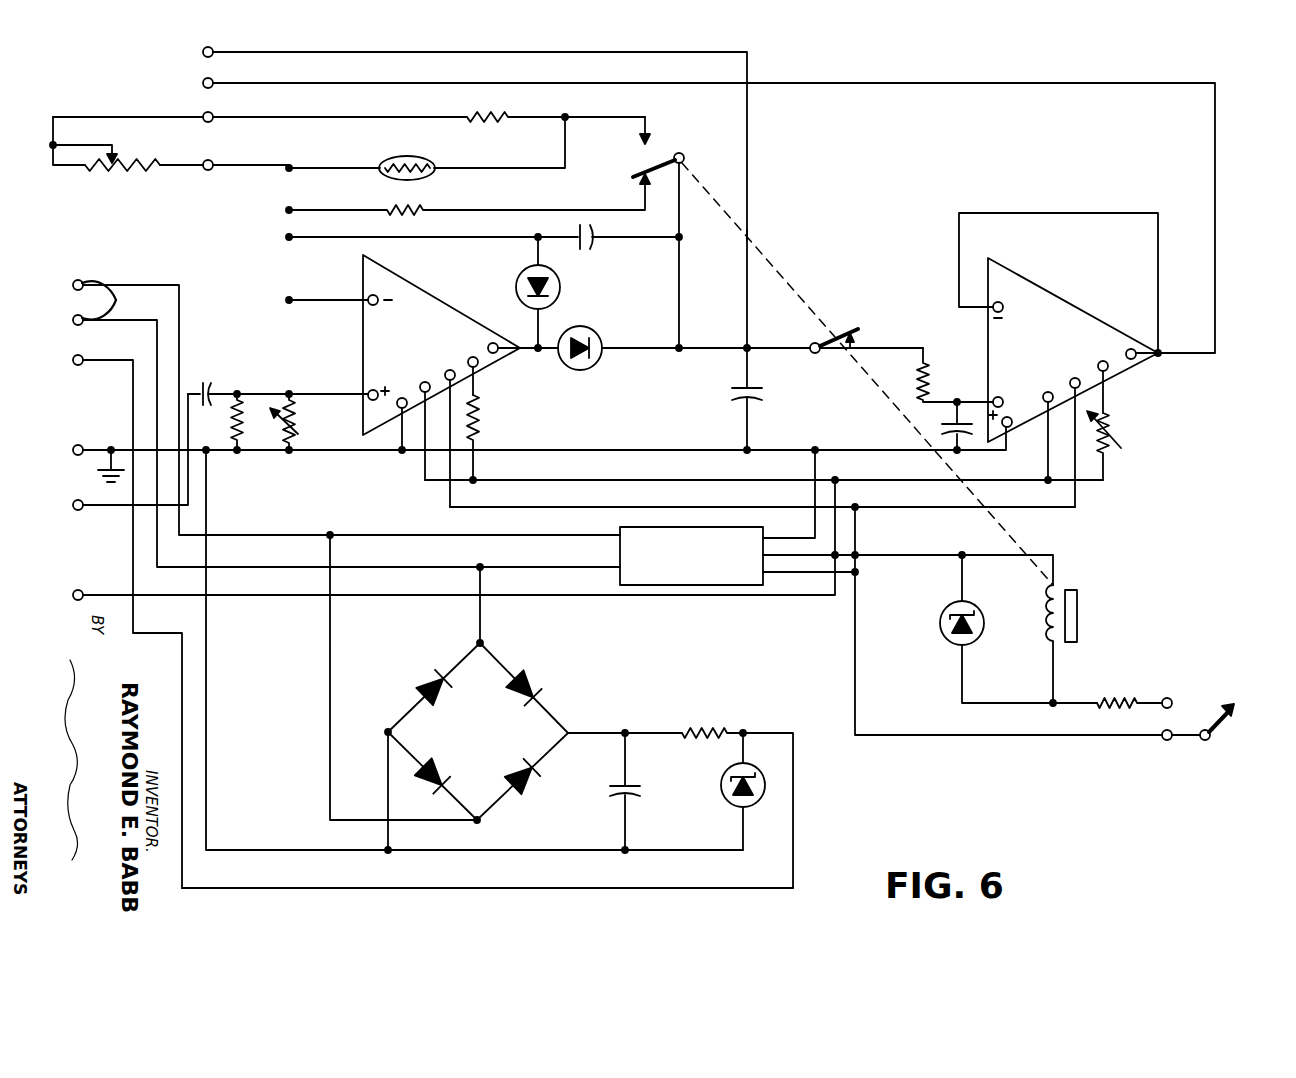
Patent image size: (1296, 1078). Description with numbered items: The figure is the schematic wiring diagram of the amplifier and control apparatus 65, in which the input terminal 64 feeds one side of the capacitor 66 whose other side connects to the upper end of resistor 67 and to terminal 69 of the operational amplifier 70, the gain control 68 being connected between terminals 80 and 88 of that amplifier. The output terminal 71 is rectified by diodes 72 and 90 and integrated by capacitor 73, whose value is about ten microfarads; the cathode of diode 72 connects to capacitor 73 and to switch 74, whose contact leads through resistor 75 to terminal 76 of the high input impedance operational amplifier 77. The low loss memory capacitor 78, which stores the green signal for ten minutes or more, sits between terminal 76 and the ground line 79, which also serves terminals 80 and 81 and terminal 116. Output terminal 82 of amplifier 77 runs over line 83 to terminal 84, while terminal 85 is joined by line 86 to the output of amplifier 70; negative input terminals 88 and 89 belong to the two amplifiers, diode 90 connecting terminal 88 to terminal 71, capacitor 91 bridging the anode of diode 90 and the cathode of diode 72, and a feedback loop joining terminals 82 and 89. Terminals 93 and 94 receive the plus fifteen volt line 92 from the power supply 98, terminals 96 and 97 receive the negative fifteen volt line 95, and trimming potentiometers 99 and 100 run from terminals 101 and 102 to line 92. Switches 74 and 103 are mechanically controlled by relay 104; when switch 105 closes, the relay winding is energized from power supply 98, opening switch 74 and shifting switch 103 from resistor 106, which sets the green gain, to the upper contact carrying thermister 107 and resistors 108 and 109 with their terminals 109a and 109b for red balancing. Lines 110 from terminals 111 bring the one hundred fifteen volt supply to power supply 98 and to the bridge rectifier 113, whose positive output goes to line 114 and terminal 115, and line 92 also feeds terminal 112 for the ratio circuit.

The input terminal 64 is at (80, 500).
The amplifier and control apparatus 65 is at (306, 508).
The capacitor 66 is at (208, 384).
The resistor 67 is at (240, 401).
The gain control 68 is at (298, 413).
The terminal 69 is at (369, 395).
The operational amplifier 70 is at (366, 319).
The output terminal 71 is at (498, 353).
The diode 72 is at (590, 369).
The capacitor 73 is at (763, 396).
The switch 74 is at (818, 357).
The resistor 75 is at (918, 383).
The terminal 76 is at (993, 399).
The operational amplifier 77 is at (993, 334).
The capacitor 78 is at (952, 431).
The ground line 79 is at (820, 451).
The terminal 80 is at (401, 408).
The terminal 81 is at (1011, 426).
The output terminal 82 is at (1137, 358).
The line 83 is at (1076, 93).
The terminal 84 is at (203, 86).
The terminal 85 is at (203, 55).
The line 86 is at (747, 233).
The negative input terminal 88 is at (369, 299).
The negative input terminal 89 is at (1000, 301).
The diode rectifier 90 is at (517, 284).
The capacitor 91 is at (592, 251).
The plus 15 volt line 92 is at (540, 480).
The terminal 93 is at (420, 388).
The terminal 94 is at (1045, 401).
The negative 15 volt line 95 is at (595, 506).
The terminal 96 is at (456, 376).
The terminal 97 is at (1080, 386).
The power supply 98 is at (700, 588).
The trimming potentiometer 99 is at (479, 426).
The trimming potentiometer 100 is at (1110, 429).
The terminal 101 is at (479, 352).
The terminal 102 is at (1103, 360).
The switch 103 is at (649, 163).
The relay 104 is at (1047, 626).
The switch 105 is at (1236, 719).
The resistor 106 is at (425, 210).
The thermister 107 is at (395, 160).
The resistor 108 is at (495, 123).
The resistor 109 is at (119, 158).
The terminal 109a is at (213, 114).
The terminal 109b is at (213, 161).
The lines 110 is at (405, 549).
The terminals 111 is at (84, 302).
The terminal 112 is at (82, 592).
The bridge rectifier 113 is at (463, 744).
The line 114 is at (500, 888).
The terminal 115 is at (83, 358).
The terminal 116 is at (83, 448).